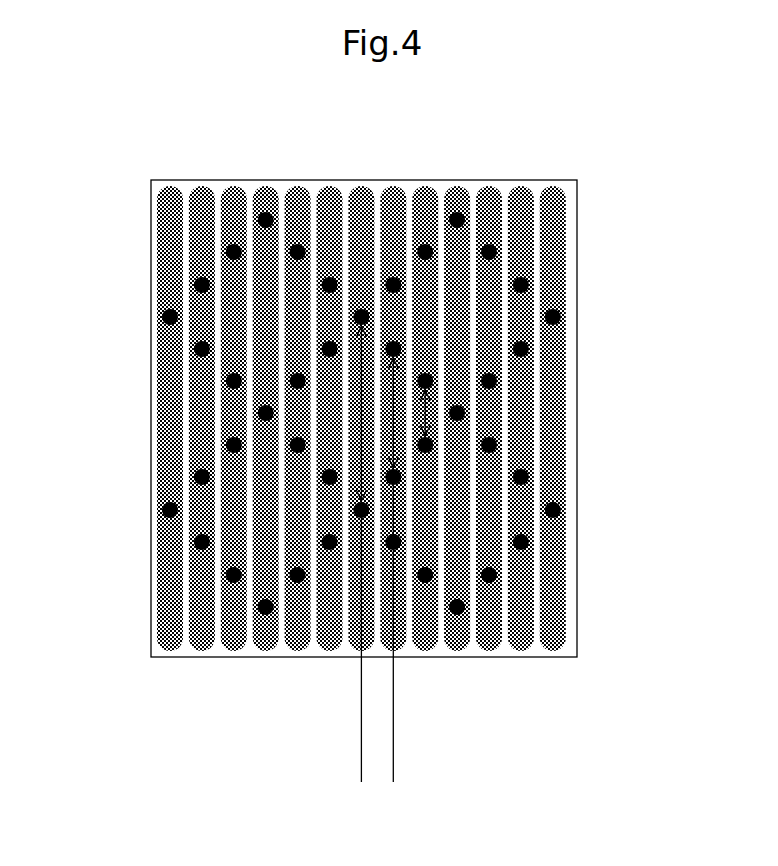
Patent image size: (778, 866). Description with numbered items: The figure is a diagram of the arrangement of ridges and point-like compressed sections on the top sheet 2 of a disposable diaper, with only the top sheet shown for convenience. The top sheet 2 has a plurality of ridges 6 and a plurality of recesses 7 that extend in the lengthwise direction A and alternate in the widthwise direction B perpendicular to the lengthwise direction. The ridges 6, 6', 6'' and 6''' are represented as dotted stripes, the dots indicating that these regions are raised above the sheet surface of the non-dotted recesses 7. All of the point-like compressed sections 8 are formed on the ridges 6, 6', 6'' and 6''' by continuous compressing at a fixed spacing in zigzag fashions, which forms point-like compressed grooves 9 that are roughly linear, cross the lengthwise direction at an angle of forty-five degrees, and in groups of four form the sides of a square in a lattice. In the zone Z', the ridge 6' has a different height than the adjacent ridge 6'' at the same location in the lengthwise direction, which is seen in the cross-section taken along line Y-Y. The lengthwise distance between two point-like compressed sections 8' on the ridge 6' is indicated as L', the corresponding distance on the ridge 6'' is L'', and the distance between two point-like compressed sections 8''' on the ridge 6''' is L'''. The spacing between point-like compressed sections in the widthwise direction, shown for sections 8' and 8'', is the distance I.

The top sheet 2 is at (130, 163).
The ridge 6 is at (525, 376).
The ridge 6' is at (361, 377).
The ridge 6'' is at (395, 377).
The ridge 6''' is at (436, 377).
The recess 7 is at (545, 190).
The point-like compressed section 8 is at (406, 413).
The point-like compressed section 8' is at (214, 388).
The point-like compressed section 8'' is at (522, 424).
The point-like compressed section 8''' is at (556, 326).
The point-like compressed groove 9 is at (265, 198).
The distance between point-like compressed sections 8' L' is at (218, 413).
The distance between point-like compressed sections on ridge 6'' L'' is at (521, 471).
The distance between point-like compressed sections 8''' L''' is at (543, 386).
The zone Z' is at (218, 468).
The cross-section line Y- Y is at (138, 410).
The spacing between point-like compressed sections in the widthwise direction I is at (318, 765).
The widthwise direction B is at (287, 680).
The lengthwise direction A is at (689, 563).